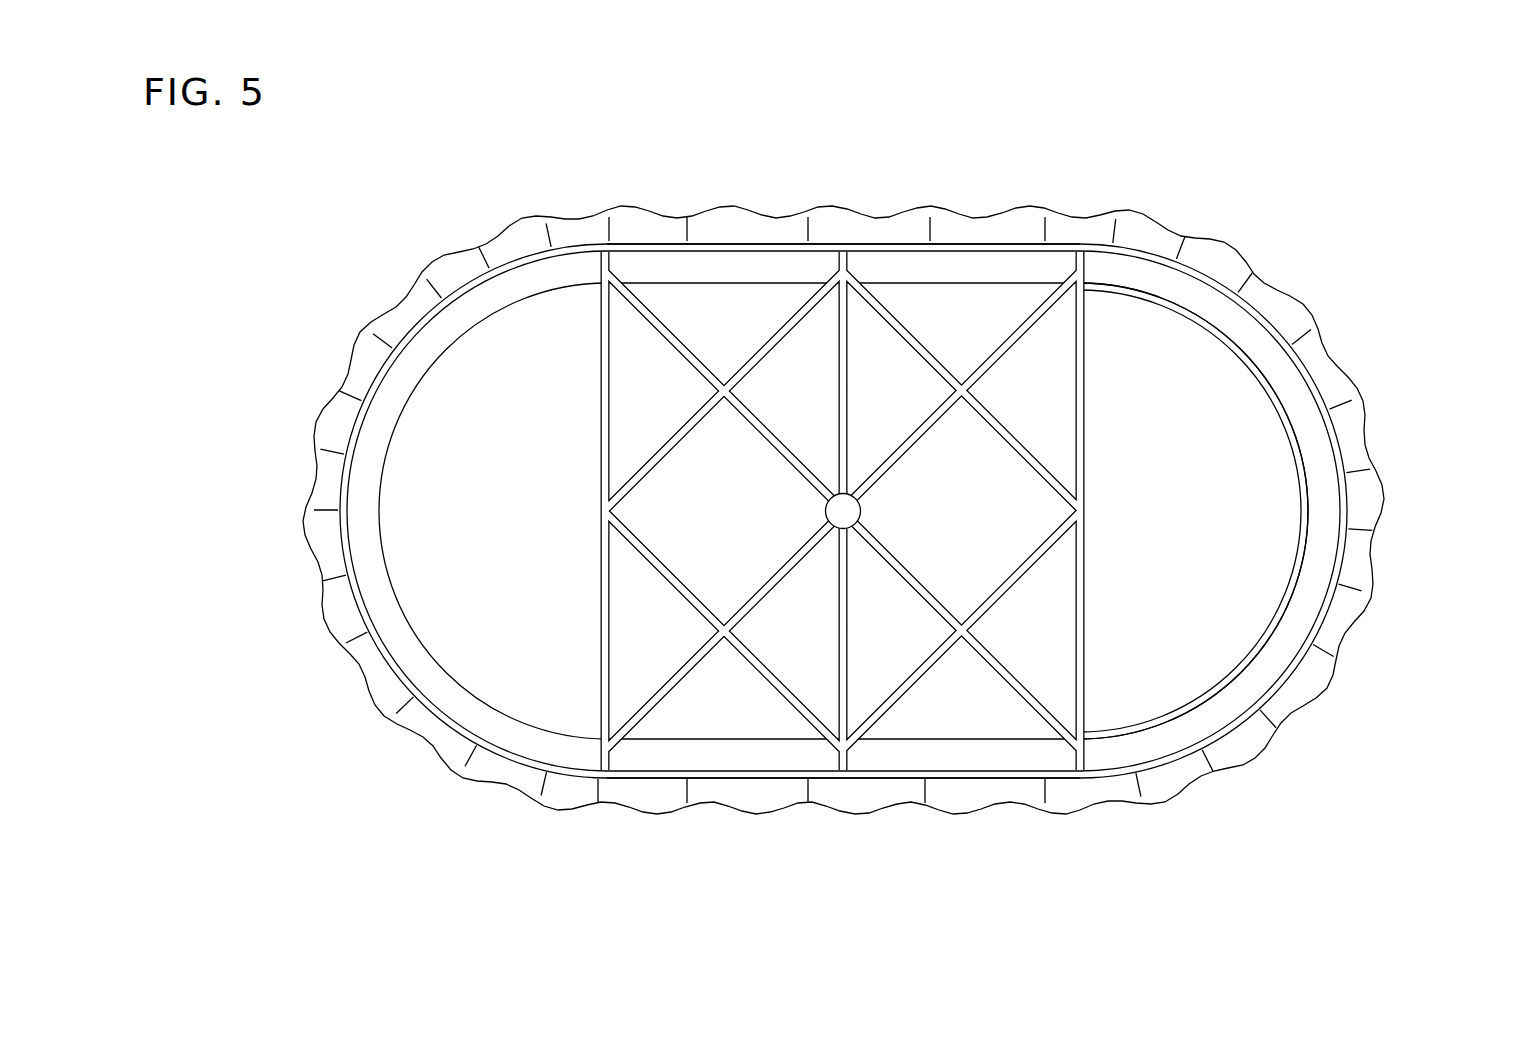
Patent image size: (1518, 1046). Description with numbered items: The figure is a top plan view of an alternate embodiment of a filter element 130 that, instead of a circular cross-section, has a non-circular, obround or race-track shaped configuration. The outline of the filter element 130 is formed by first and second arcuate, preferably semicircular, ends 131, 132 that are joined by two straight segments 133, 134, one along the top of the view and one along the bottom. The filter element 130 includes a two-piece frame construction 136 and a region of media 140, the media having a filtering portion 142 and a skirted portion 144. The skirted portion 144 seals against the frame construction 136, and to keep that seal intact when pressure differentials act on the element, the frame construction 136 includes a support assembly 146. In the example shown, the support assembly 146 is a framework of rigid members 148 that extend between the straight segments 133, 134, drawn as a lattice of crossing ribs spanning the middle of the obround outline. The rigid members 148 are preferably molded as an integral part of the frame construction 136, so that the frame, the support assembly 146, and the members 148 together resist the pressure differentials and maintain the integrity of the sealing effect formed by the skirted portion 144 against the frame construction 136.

The filter element 130 is at (836, 519).
The first arcuate end 131 is at (1313, 307).
The second arcuate end 132 is at (317, 411).
The straight segment 133 is at (985, 245).
The straight segment 134 is at (977, 782).
The frame construction 136 is at (392, 675).
The region of media 140 is at (1222, 648).
The filtering portion 142 is at (1210, 538).
The skirted portion 144 is at (1367, 495).
The support assembly 146 is at (774, 511).
The rigid members 148 is at (848, 393).